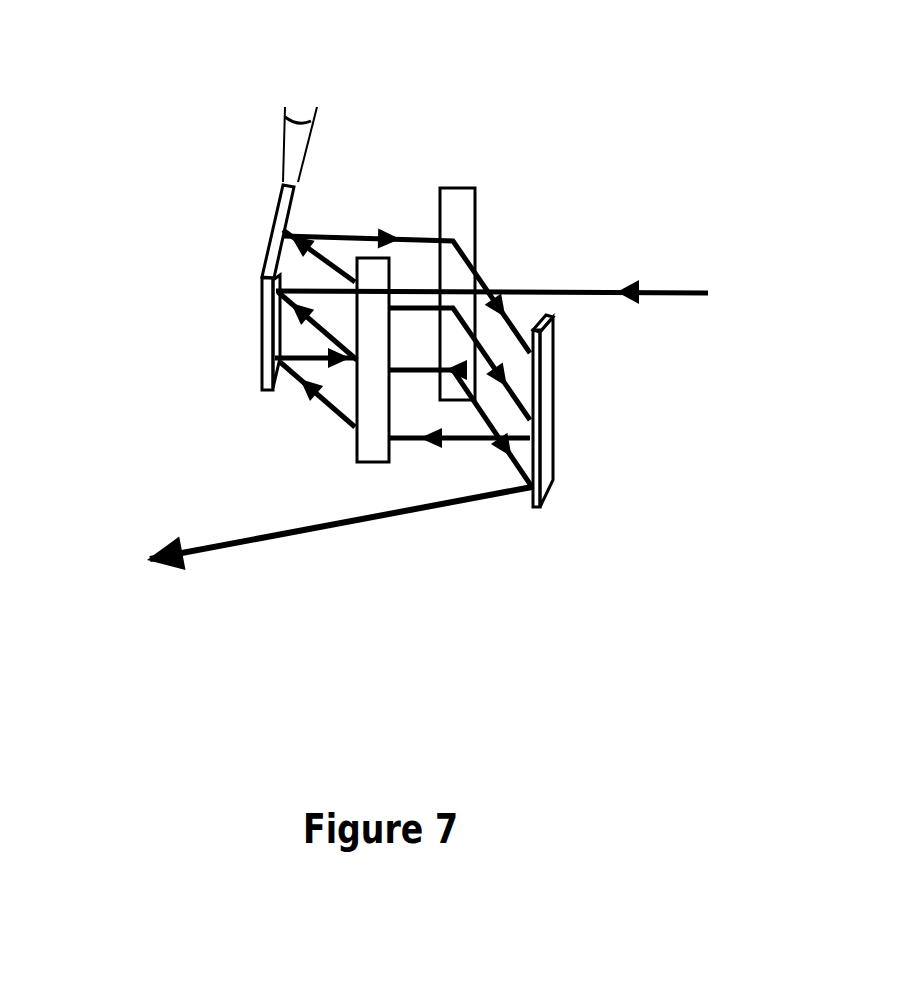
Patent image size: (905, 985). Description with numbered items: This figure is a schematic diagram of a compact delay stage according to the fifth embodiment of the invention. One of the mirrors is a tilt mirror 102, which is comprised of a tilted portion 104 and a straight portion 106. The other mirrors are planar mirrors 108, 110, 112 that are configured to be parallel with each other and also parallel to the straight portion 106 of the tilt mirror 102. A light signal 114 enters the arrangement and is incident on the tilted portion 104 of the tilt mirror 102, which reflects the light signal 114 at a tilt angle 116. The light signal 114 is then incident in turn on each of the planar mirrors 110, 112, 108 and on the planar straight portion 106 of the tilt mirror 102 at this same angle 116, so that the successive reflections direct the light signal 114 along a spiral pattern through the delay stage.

The tilt mirror 102 is at (230, 245).
The tilted portion 104 is at (302, 208).
The straight portion 106 is at (262, 373).
The planar mirror 108 is at (355, 448).
The planar mirror 110 is at (477, 232).
The planar mirror 112 is at (555, 395).
The light signal 114 is at (643, 280).
The tilt angle 116 is at (300, 110).